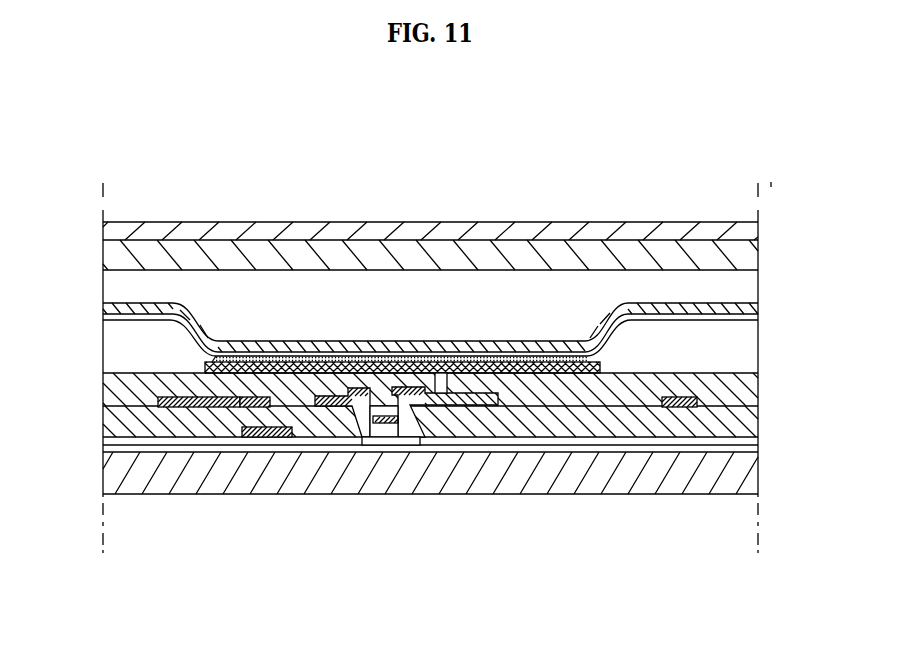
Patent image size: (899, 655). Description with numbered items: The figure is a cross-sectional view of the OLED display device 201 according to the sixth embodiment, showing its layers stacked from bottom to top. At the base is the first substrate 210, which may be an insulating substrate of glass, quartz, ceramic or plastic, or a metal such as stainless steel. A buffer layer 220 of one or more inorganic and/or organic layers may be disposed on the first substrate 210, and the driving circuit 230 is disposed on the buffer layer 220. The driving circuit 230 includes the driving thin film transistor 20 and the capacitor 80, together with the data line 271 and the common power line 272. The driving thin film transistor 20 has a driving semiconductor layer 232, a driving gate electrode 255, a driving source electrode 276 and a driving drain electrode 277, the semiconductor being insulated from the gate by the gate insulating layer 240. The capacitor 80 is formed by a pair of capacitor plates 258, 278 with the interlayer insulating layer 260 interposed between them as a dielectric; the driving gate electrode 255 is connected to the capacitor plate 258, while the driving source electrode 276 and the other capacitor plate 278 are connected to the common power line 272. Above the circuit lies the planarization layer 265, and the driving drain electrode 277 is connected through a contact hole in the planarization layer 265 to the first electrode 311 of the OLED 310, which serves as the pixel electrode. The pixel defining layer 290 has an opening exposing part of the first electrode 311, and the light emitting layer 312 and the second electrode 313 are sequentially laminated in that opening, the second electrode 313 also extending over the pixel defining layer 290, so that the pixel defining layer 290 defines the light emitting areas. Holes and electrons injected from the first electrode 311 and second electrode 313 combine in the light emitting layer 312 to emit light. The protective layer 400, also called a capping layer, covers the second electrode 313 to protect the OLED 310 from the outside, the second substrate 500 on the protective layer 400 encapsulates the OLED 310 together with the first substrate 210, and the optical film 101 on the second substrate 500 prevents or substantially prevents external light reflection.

The OLED display device 201 is at (142, 101).
The OLED 310 is at (250, 180).
The first electrode 311 is at (257, 367).
The light emitting layer 312 is at (302, 355).
The second electrode 313 is at (353, 350).
The protective layer 400 is at (482, 344).
The second substrate 500 is at (548, 255).
The optical film 101 is at (660, 231).
The pixel defining layer 290 is at (118, 348).
The driving circuit 230 is at (100, 373).
The planarization layer 265 is at (737, 384).
The interlayer insulating layer 260 is at (737, 427).
The gate insulating layer 240 is at (533, 441).
The buffer layer 220 is at (582, 449).
The first substrate 210 is at (737, 472).
The common power line 272 is at (172, 402).
The data line 271 is at (683, 405).
The capacitor 80 is at (197, 588).
The capacitor plate 278 is at (240, 404).
The capacitor plate 258 is at (267, 433).
The driving thin film transistor 20 is at (300, 598).
The driving source electrode 276 is at (345, 400).
The driving drain electrode 277 is at (480, 404).
The driving gate electrode 255 is at (400, 421).
The driving semiconductor layer 232 is at (387, 443).